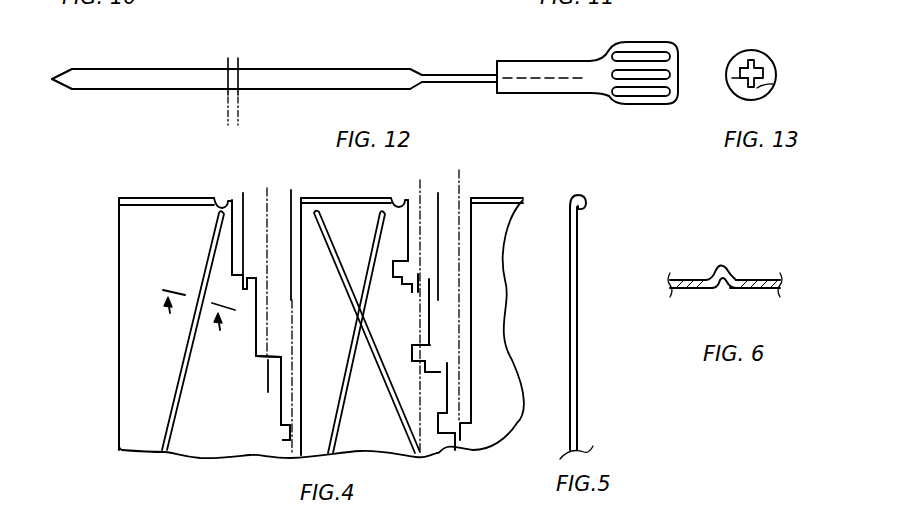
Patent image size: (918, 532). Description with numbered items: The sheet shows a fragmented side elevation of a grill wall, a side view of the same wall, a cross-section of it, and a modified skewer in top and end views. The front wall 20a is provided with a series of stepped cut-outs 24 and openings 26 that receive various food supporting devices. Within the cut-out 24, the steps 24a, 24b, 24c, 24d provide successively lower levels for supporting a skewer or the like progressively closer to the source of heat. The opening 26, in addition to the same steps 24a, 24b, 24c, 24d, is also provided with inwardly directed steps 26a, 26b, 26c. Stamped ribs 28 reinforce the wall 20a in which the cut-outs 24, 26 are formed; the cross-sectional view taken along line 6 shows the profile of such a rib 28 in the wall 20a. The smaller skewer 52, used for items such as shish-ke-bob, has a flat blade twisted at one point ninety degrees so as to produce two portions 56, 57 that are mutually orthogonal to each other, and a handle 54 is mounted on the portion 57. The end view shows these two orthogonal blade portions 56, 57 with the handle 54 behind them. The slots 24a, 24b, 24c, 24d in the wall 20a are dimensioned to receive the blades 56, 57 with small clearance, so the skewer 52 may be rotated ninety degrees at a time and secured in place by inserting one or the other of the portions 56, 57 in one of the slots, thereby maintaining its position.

In FIG. 4, the section line 6— 6 is at (193, 319).
In FIG. 4, the front wall 20a is at (137, 413).
In FIG. 5, the front wall 20a is at (578, 268).
In FIG. 6, the front wall 20a is at (772, 279).
In FIG. 4, the stepped cut-out 24 is at (262, 205).
In FIG. 4, the step 24a is at (220, 199).
In FIG. 4, the step 24b is at (235, 283).
In FIG. 4, the step 24c is at (266, 366).
In FIG. 4, the step 24d is at (285, 437).
In FIG. 4, the opening 26 is at (439, 202).
In FIG. 4, the inwardly directed step 26a is at (392, 280).
In FIG. 4, the inwardly directed step 26b is at (412, 361).
In FIG. 4, the inwardly directed step 26c is at (444, 456).
In FIG. 4, the stamped rib 28 is at (180, 358).
In FIG. 6, the stamped rib 28 is at (721, 268).
In FIG. 12, the skewer 52 is at (266, 52).
In FIG. 12, the handle 54 is at (673, 42).
In FIG. 13, the handle 54 is at (776, 63).
In FIG. 12, the blade portion 56 is at (162, 91).
In FIG. 13, the blade portion 56 is at (776, 86).
In FIG. 12, the blade portion 57 is at (432, 72).
In FIG. 13, the blade portion 57 is at (729, 83).